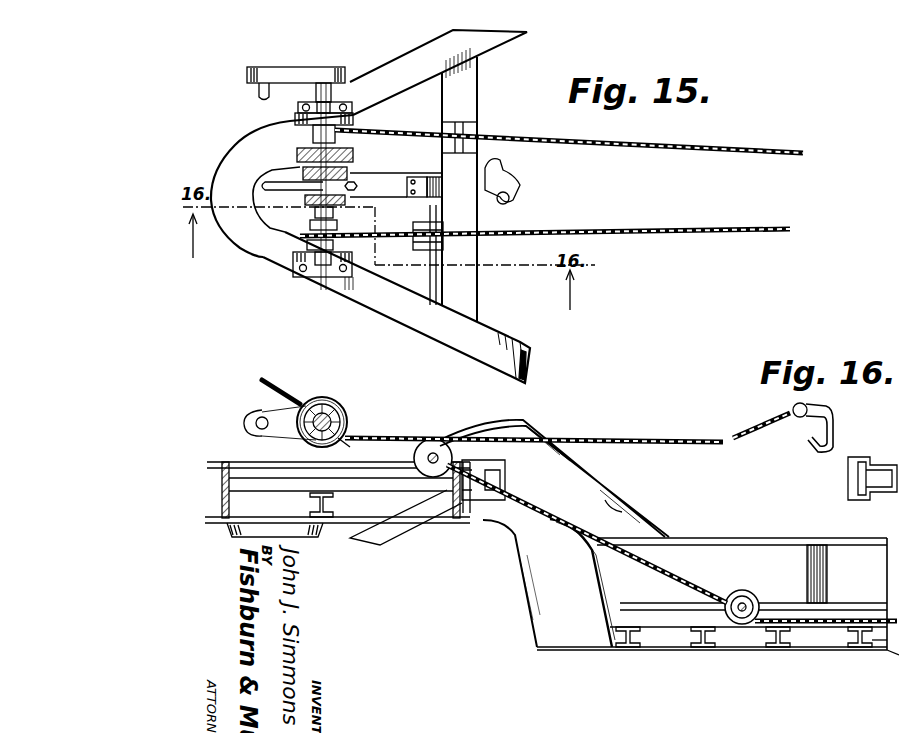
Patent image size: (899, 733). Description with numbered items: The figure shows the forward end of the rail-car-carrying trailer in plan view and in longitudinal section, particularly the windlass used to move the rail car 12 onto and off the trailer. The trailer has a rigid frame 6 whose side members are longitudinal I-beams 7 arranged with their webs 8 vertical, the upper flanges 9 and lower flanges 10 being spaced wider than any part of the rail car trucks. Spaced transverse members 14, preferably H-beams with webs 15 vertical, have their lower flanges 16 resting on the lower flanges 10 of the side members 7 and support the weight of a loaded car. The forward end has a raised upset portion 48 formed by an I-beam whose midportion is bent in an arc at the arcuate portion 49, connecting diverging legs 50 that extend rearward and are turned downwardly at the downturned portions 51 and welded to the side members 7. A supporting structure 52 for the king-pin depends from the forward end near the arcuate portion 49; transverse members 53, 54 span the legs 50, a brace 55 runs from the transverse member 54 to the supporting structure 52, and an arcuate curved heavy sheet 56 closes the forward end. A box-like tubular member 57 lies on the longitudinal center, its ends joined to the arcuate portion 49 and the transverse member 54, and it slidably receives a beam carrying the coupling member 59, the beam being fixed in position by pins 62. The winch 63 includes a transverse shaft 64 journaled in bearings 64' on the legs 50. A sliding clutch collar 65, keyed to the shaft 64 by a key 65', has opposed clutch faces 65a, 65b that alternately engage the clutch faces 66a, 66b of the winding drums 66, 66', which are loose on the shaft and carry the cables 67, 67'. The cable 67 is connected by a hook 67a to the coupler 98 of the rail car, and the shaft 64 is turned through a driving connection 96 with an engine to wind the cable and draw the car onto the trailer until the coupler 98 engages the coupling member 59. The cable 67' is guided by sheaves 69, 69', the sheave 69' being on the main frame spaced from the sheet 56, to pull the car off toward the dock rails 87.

In FIG. 16, the frame 6 is at (703, 648).
In FIG. 16, the I-beam side members 7 is at (790, 550).
In FIG. 16, the web 8 is at (885, 634).
In FIG. 16, the upper flange 9 is at (745, 540).
In FIG. 16, the lower flange 10 is at (760, 648).
In FIG. 15, the rail car 12 is at (898, 178).
In FIG. 16, the transverse members 14 is at (640, 645).
In FIG. 16, the web 15 is at (838, 640).
In FIG. 16, the lower flange 16 is at (875, 645).
In FIG. 15, the upset portion 48 is at (527, 348).
In FIG. 16, the upset portion 48 is at (530, 422).
In FIG. 15, the arcuate portion 49 is at (243, 133).
In FIG. 16, the arcuate portion 49 is at (221, 470).
In FIG. 15, the diverging legs 50 is at (498, 45).
In FIG. 16, the diverging legs 50 is at (625, 510).
In FIG. 16, the downturned portion 51 is at (610, 480).
In FIG. 16, the king-pin supporting structure 52 is at (310, 535).
In FIG. 16, the transverse member 53 is at (312, 500).
In FIG. 15, the transverse member 54 is at (478, 296).
In FIG. 16, the transverse member 54 is at (468, 515).
In FIG. 16, the brace 55 is at (390, 530).
In FIG. 16, the arcuate curved heavy sheet 56 is at (598, 590).
In FIG. 15, the tubular member 57 is at (395, 178).
In FIG. 16, the tubular member 57 is at (288, 480).
In FIG. 15, the coupling member 59 is at (516, 190).
In FIG. 16, the coupling member 59 is at (522, 476).
In FIG. 15, the pins 62 is at (358, 188).
In FIG. 16, the pins 62 is at (348, 443).
In FIG. 15, the winch 63 is at (298, 268).
In FIG. 16, the winch 63 is at (347, 405).
In FIG. 15, the transverse shaft 64 is at (338, 96).
In FIG. 16, the transverse shaft 64 is at (351, 418).
In FIG. 15, the bearings 64' is at (316, 162).
In FIG. 15, the sliding clutch collar 65 is at (360, 219).
In FIG. 16, the sliding clutch collar 65 is at (289, 397).
In FIG. 16, the key 65' is at (327, 395).
In FIG. 15, the clutch face 65a is at (305, 178).
In FIG. 15, the clutch face 65b is at (300, 210).
In FIG. 16, the clutch face 65b is at (272, 393).
In FIG. 15, the winding drum 66 is at (349, 124).
In FIG. 16, the winding drum 66 is at (343, 399).
In FIG. 15, the winding drum 66' is at (369, 267).
In FIG. 15, the clutch face 66a is at (353, 157).
In FIG. 15, the clutch face 66b is at (305, 228).
In FIG. 15, the cable 67 is at (569, 150).
In FIG. 16, the cable 67 is at (567, 441).
In FIG. 15, the cable 67' is at (545, 242).
In FIG. 16, the cable 67' is at (672, 543).
In FIG. 16, the hook 67a is at (838, 450).
In FIG. 15, the sheaves 69 is at (425, 263).
In FIG. 16, the sheaves 69 is at (441, 439).
In FIG. 16, the sheave 69' is at (764, 600).
In FIG. 16, the rails 87 is at (898, 675).
In FIG. 15, the driving connection 96 is at (259, 88).
In FIG. 16, the driving connection 96 is at (248, 432).
In FIG. 16, the coupler 98 is at (848, 468).